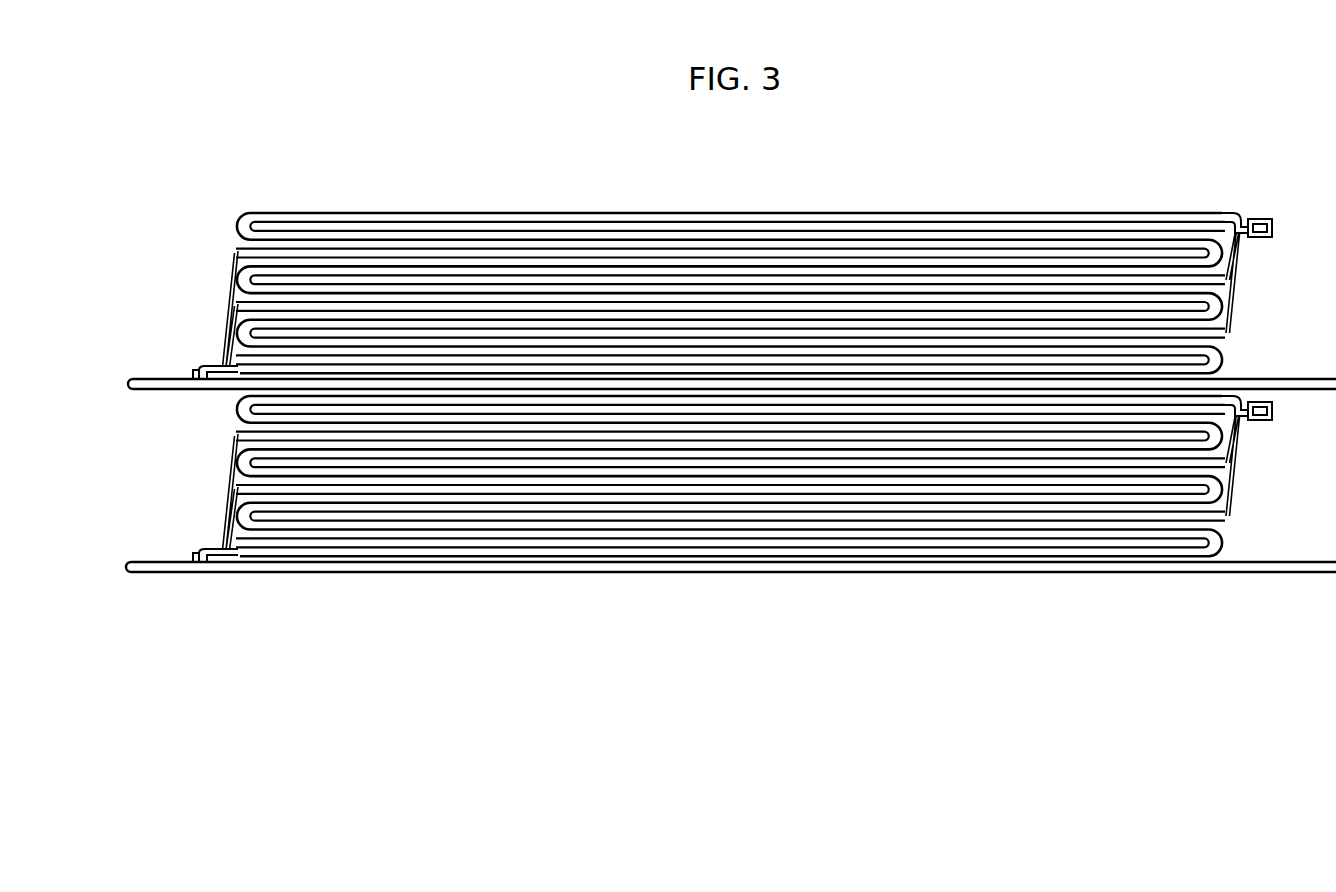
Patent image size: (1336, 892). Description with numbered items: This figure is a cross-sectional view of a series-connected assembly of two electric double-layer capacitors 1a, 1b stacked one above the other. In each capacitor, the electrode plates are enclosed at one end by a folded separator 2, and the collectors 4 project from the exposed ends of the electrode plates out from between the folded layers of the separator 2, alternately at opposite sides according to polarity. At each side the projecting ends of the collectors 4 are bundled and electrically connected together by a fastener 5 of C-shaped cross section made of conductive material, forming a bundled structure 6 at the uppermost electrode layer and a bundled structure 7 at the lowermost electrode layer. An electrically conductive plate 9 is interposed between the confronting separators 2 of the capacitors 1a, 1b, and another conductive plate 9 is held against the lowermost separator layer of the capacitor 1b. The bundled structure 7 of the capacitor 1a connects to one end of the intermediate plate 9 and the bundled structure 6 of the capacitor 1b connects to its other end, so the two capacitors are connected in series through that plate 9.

The electric double-layer capacitor 1a is at (861, 188).
The electric double-layer capacitor 1b is at (792, 583).
The folded separator 2 is at (447, 380).
The collectors 4 is at (237, 277).
The fastener 5 is at (1272, 229).
The bundled structure 6 is at (1263, 196).
The bundled structure 7 is at (187, 337).
The electrically conductive plate 9 is at (1300, 379).